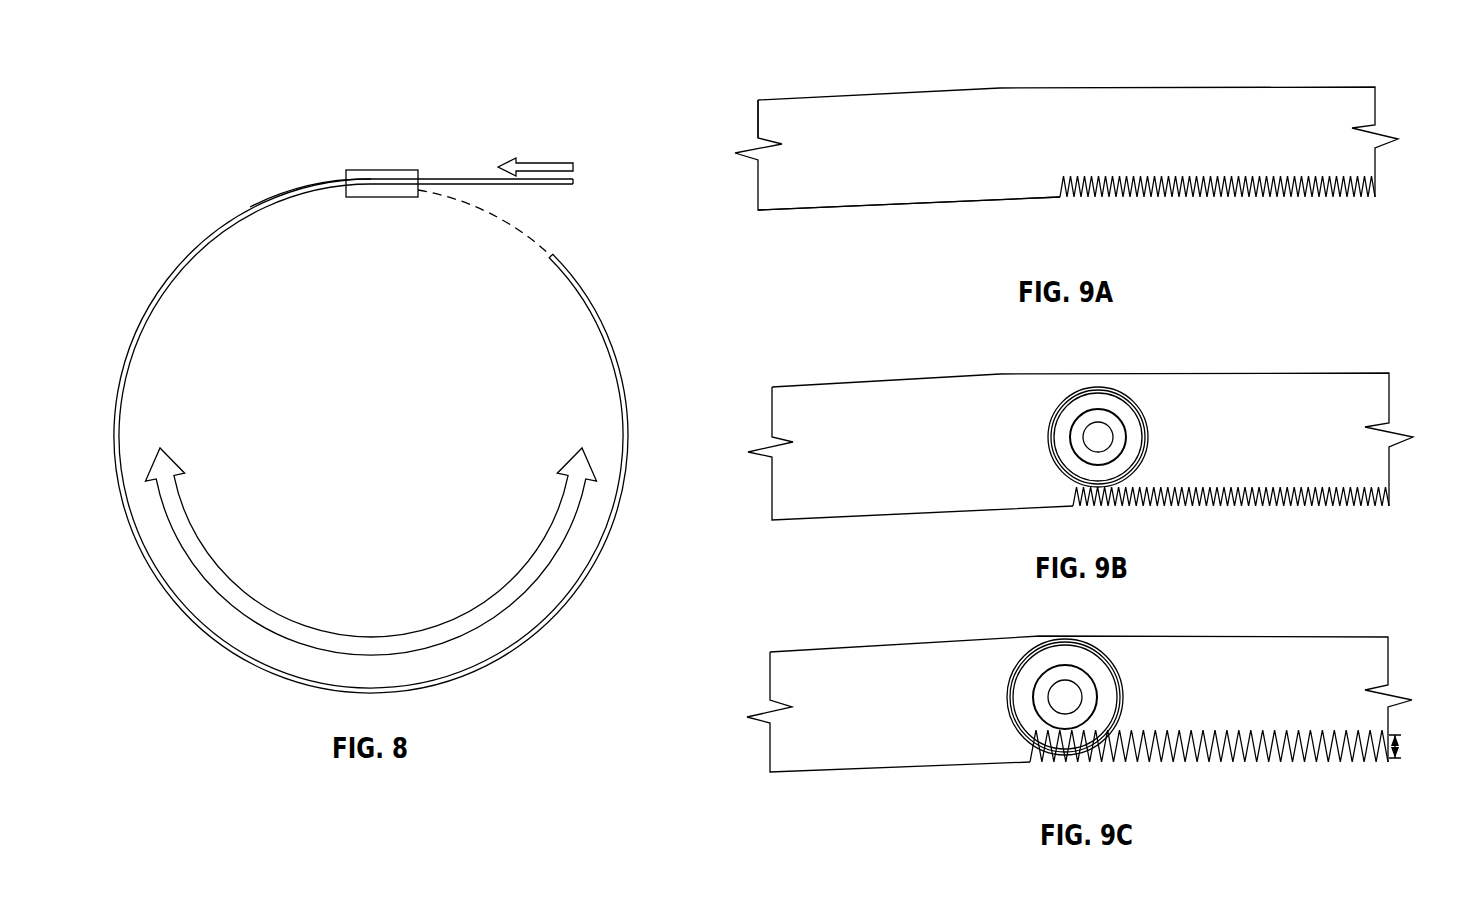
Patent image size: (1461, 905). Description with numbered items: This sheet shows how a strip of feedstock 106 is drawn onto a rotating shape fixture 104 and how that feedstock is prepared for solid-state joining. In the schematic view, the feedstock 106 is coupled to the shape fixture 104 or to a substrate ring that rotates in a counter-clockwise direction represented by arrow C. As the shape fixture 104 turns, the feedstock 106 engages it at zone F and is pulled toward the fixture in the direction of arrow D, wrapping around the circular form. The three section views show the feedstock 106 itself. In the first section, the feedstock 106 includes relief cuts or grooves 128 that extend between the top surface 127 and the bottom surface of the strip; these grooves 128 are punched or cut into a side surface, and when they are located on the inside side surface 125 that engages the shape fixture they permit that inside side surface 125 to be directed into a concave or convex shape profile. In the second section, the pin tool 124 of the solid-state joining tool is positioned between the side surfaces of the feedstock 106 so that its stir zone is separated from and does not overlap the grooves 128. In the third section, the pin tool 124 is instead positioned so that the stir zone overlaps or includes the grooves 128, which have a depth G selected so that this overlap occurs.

In FIG. 8, the shape fixture 104 is at (578, 387).
In FIG. 8, the feedstock 106 is at (247, 210).
In FIG. 9A, the feedstock 106 is at (841, 112).
In FIG. 9B, the feedstock 106 is at (864, 397).
In FIG. 9C, the feedstock 106 is at (864, 664).
In FIG. 9B, the pin tool 124 is at (1127, 438).
In FIG. 9C, the pin tool 124 is at (1097, 697).
In FIG. 9A, the inside side surface 125 is at (880, 205).
In FIG. 9A, the top surface 127 is at (758, 108).
In FIG. 9A, the grooves 128 is at (1211, 204).
In FIG. 9B, the grooves 128 is at (1218, 512).
In FIG. 9C, the grooves 128 is at (1208, 768).
In FIG. 8, the zone F is at (383, 170).
In FIG. 8, the arrow D is at (539, 163).
In FIG. 8, the arrow C is at (320, 637).
In FIG. 9C, the depth G is at (1401, 748).